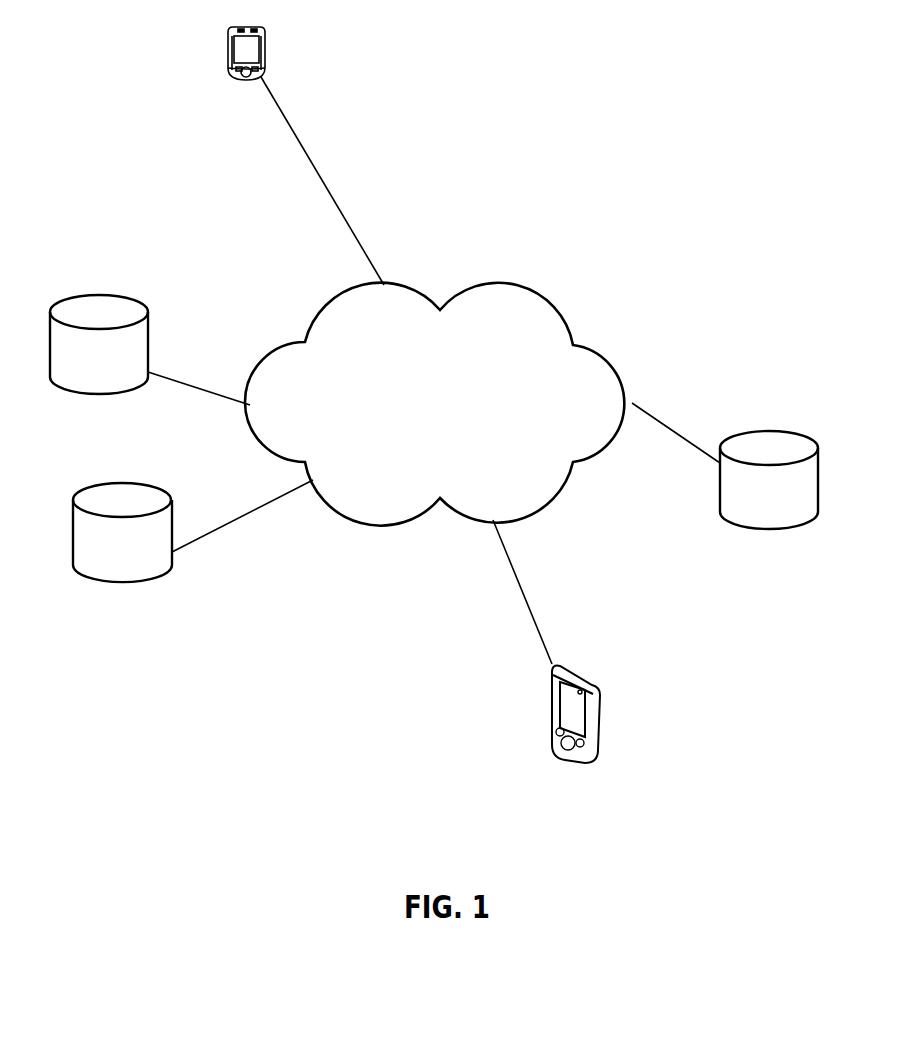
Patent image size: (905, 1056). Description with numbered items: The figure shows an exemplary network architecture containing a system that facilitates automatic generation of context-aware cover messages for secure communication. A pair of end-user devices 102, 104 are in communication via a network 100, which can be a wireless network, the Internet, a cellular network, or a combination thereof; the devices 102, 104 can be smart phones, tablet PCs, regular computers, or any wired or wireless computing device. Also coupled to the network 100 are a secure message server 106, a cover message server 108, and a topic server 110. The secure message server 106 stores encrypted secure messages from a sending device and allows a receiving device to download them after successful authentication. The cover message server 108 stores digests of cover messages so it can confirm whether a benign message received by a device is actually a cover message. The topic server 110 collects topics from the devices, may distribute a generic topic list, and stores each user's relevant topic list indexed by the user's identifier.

The network 100 is at (434, 370).
The end-user device 102 is at (249, 79).
The end-user device 104 is at (557, 748).
The secure message server 106 is at (150, 328).
The cover message server 108 is at (175, 513).
The topic server 110 is at (813, 438).